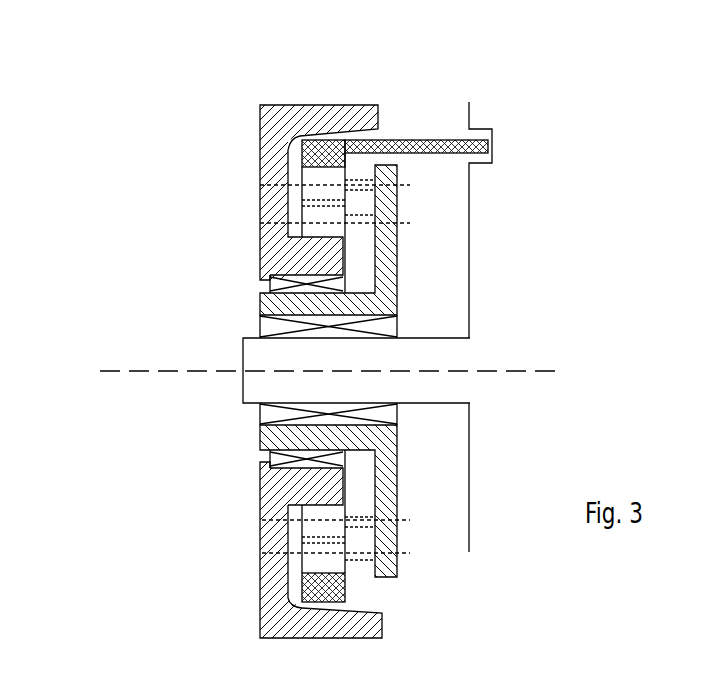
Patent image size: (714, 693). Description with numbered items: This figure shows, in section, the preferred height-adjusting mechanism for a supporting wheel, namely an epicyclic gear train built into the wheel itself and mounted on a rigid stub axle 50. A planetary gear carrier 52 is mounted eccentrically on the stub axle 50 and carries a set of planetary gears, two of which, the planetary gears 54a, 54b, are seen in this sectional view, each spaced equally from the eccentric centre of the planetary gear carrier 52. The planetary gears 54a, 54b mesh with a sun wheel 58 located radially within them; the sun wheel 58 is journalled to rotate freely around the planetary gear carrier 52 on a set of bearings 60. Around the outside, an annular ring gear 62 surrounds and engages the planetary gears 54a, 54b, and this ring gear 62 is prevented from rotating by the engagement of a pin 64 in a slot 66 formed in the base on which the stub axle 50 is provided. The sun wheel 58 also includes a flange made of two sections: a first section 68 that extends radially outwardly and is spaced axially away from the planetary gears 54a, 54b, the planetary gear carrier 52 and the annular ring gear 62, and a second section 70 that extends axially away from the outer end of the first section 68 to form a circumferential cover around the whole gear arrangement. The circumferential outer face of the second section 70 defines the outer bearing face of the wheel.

The stub axle 50 is at (272, 376).
The planetary gear carrier 52 is at (262, 304).
The planetary gear 54a is at (262, 553).
The planetary gear 54b is at (262, 520).
The sun wheel 58 is at (262, 479).
The bearings 60 is at (262, 413).
The annular ring gear 62 is at (350, 141).
The pin 64 is at (427, 150).
The slot 66 is at (492, 148).
The first section 68 is at (260, 158).
The second section 70 is at (303, 105).